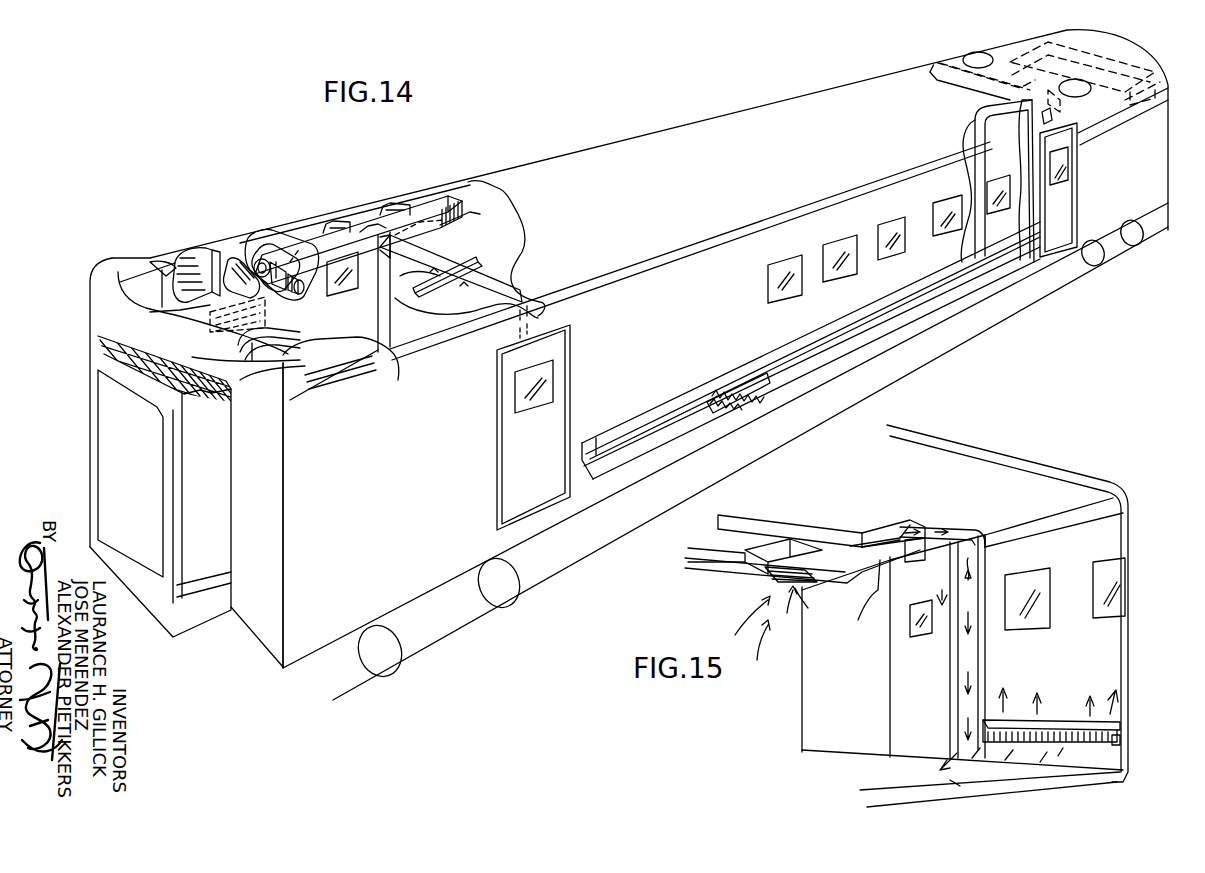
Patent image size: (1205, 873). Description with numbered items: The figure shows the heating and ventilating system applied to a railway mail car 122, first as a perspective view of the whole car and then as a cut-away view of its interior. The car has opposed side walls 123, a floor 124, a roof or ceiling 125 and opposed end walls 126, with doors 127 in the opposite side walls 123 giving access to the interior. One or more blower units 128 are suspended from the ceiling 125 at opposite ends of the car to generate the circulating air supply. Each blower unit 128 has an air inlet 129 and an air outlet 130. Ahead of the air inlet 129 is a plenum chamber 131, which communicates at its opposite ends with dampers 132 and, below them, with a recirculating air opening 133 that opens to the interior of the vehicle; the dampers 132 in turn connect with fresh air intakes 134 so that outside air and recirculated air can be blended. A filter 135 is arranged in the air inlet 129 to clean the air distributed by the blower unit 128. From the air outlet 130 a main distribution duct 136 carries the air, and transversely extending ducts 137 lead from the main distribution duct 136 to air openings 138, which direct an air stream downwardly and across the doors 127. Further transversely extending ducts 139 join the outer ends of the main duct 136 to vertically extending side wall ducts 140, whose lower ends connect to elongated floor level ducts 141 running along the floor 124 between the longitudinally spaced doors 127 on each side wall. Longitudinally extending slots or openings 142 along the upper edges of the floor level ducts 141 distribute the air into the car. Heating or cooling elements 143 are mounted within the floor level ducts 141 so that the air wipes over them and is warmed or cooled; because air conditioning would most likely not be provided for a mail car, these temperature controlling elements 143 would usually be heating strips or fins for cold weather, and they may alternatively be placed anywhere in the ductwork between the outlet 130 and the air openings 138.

In FIG. 14, the railway mail car 122 is at (537, 156).
In FIG. 14, the side walls 123 is at (353, 323).
In FIG. 15, the side walls 123 is at (1125, 652).
In FIG. 15, the floor 124 is at (950, 780).
In FIG. 14, the roof or ceiling 125 is at (476, 231).
In FIG. 14, the end walls 126 is at (262, 552).
In FIG. 15, the end walls 126 is at (785, 697).
In FIG. 14, the doors 127 is at (550, 490).
In FIG. 15, the doors 127 is at (908, 683).
In FIG. 14, the blower unit 128 is at (247, 237).
In FIG. 15, the blower unit 128 is at (806, 545).
In FIG. 14, the air inlet 129 is at (200, 287).
In FIG. 14, the air outlet 130 is at (273, 233).
In FIG. 14, the plenum chamber 131 is at (160, 257).
In FIG. 15, the plenum chamber 131 is at (798, 590).
In FIG. 14, the dampers 132 is at (180, 260).
In FIG. 14, the recirculating air opening 133 is at (183, 313).
In FIG. 14, the fresh air intakes 134 is at (127, 262).
In FIG. 14, the filter 135 is at (238, 262).
In FIG. 14, the main distribution duct 136 is at (367, 227).
In FIG. 15, the main distribution duct 136 is at (865, 598).
In FIG. 14, the transversely extending ducts 137 is at (355, 217).
In FIG. 15, the transversely extending ducts 137 is at (830, 533).
In FIG. 15, the air openings 138 is at (942, 605).
In FIG. 14, the transversely extending ducts 139 is at (490, 202).
In FIG. 15, the transversely extending ducts 139 is at (938, 526).
In FIG. 14, the side wall ducts 140 is at (400, 286).
In FIG. 15, the side wall ducts 140 is at (983, 587).
In FIG. 14, the floor level ducts 141 is at (813, 358).
In FIG. 15, the floor level ducts 141 is at (1092, 765).
In FIG. 14, the slots or openings 142 is at (583, 440).
In FIG. 15, the slots or openings 142 is at (1047, 727).
In FIG. 14, the heating or cooling elements 143 is at (770, 383).
In FIG. 15, the heating or cooling elements 143 is at (1120, 742).